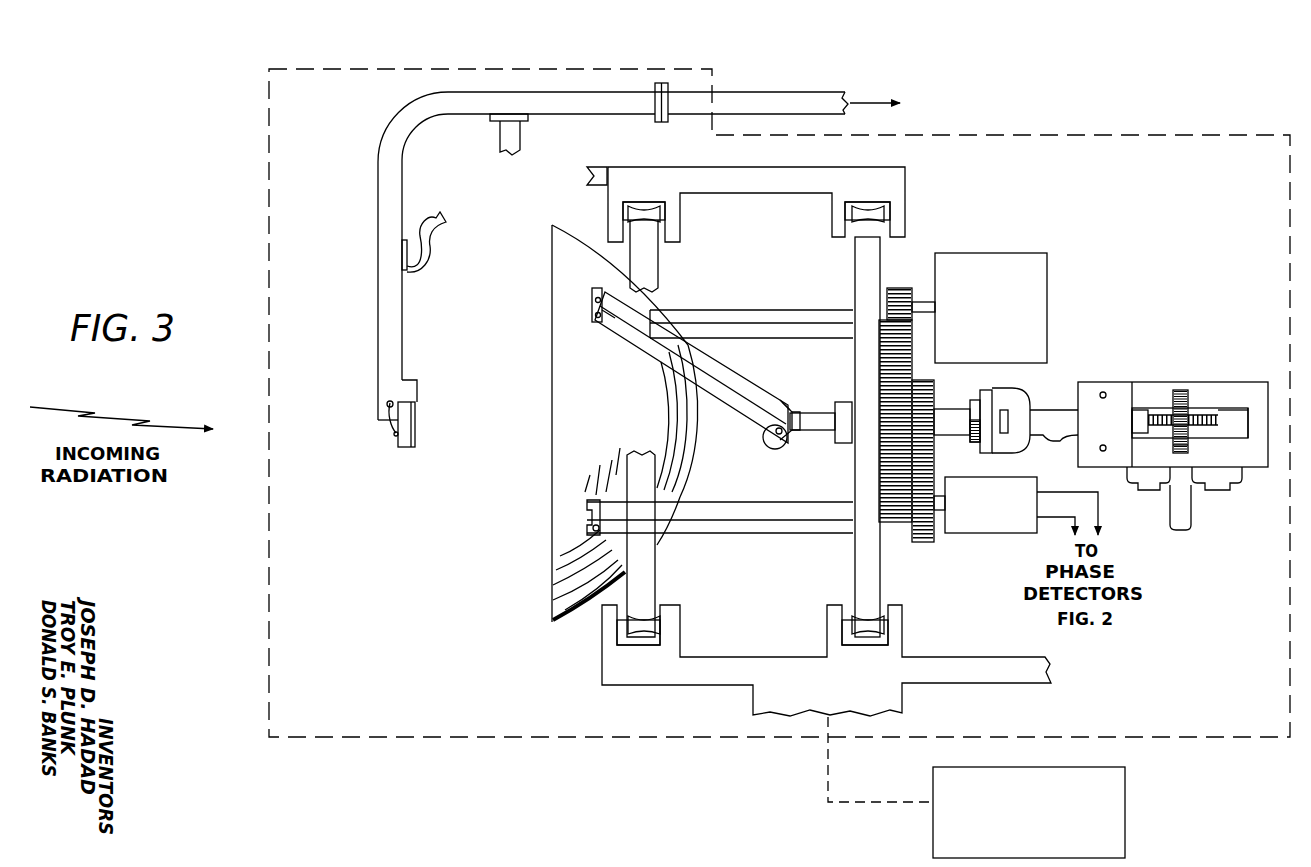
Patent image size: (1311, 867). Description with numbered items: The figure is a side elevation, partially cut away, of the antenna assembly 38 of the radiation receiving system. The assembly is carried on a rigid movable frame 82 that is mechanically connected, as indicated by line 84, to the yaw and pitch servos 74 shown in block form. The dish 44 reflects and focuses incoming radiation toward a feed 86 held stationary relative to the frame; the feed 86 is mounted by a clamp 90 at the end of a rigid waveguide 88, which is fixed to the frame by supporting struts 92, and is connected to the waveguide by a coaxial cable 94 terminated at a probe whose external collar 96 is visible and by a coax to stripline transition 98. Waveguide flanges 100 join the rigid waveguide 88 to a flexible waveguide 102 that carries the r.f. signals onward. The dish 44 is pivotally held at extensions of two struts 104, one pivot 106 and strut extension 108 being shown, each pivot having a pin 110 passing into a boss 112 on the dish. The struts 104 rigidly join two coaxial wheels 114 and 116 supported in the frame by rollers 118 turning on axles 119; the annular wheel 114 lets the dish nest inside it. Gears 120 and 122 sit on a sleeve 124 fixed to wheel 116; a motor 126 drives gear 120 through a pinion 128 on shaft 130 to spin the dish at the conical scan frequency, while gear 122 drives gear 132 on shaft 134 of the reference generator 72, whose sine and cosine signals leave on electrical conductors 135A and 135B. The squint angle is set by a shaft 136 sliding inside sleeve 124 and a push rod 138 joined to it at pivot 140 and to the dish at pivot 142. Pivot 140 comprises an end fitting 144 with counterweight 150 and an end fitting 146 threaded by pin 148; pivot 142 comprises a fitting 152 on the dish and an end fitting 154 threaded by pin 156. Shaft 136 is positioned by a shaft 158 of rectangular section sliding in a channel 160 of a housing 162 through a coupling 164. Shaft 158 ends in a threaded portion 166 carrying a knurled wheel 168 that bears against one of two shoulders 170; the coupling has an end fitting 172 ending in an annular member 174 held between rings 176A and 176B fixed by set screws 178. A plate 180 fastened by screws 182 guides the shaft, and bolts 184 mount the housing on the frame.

The antenna assembly 38 is at (1218, 135).
The dish 44 is at (560, 595).
The reference generator 72 is at (1000, 536).
The yaw and pitch servos 74 is at (1125, 782).
The frame 82 is at (768, 186).
The line 84 is at (830, 768).
The feed 86 is at (416, 422).
The rigid waveguide 88 is at (378, 310).
The clamp 90 is at (412, 388).
The supporting struts 92 is at (500, 135).
The coaxial cable 94 is at (392, 425).
The external collar 96 is at (386, 404).
The coax to stripline transition 98 is at (396, 436).
The waveguide flanges 100 is at (657, 83).
The flexible waveguide 102 is at (772, 92).
The struts 104 is at (776, 314).
The pivot 106 is at (578, 512).
The strut extension 108 is at (572, 573).
The pin 110 is at (593, 530).
The boss 112 is at (594, 480).
The wheel 114 is at (656, 268).
The wheel 116 is at (855, 562).
The rollers 118 is at (868, 212).
The axle 119 is at (662, 213).
The gear 120 is at (896, 525).
The gear 122 is at (938, 415).
The sleeve 124 is at (843, 446).
The motor 126 is at (1047, 258).
The pinion 128 is at (898, 288).
The shaft 130 is at (928, 300).
The gear 132 is at (924, 545).
The shaft 134 is at (940, 512).
The electrical conductor 135A is at (1072, 532).
The electrical conductor 135B is at (1100, 512).
The shaft 136 is at (816, 432).
The push rod 138 is at (730, 380).
The pivot 140 is at (789, 398).
The pivot 142 is at (600, 286).
The end fitting 144 is at (782, 404).
The end fitting 146 is at (800, 414).
The pin 148 is at (765, 433).
The counterweight 150 is at (772, 446).
The fitting 152 is at (596, 300).
The end fitting 154 is at (612, 322).
The pin 156 is at (598, 318).
The shaft 158 is at (1065, 420).
The channel 160 is at (1160, 408).
The housing 162 is at (1212, 408).
The coupling 164 is at (1150, 356).
The threaded portion 166 is at (1240, 390).
The knurled wheel 168 is at (1190, 440).
The shoulders 170 is at (1185, 392).
The end fitting 172 is at (1012, 418).
The annular member 174 is at (990, 450).
The ring 176A is at (985, 460).
The ring 176B is at (1018, 396).
The set screws 178 is at (1050, 442).
The plate 180 is at (1155, 382).
The screws 182 is at (1103, 445).
The bolts 184 is at (1220, 483).